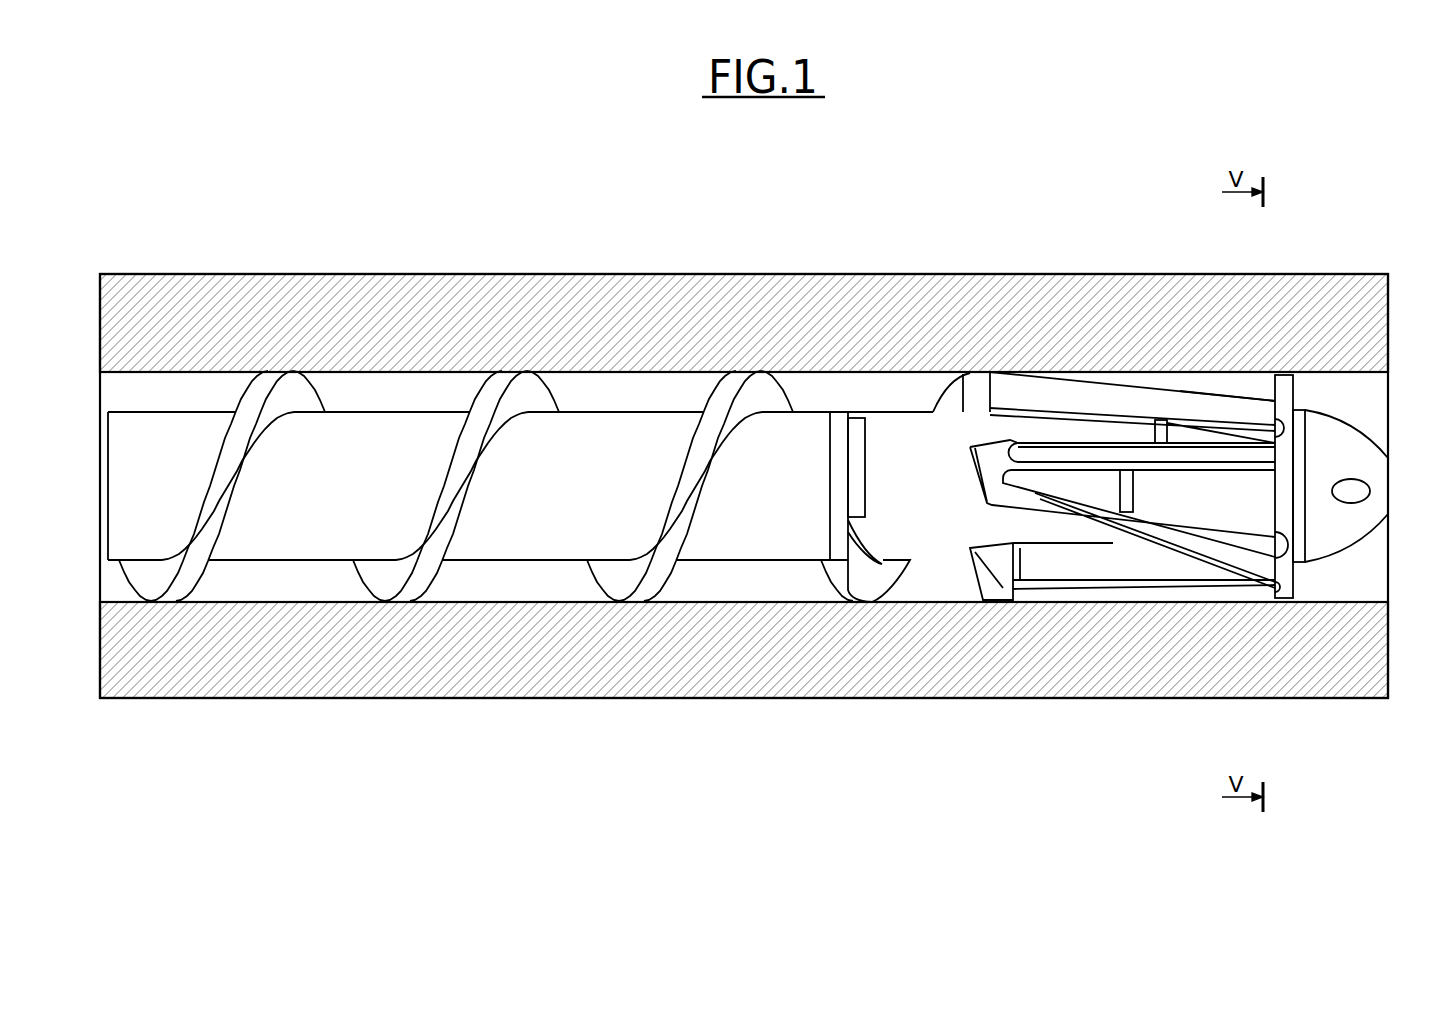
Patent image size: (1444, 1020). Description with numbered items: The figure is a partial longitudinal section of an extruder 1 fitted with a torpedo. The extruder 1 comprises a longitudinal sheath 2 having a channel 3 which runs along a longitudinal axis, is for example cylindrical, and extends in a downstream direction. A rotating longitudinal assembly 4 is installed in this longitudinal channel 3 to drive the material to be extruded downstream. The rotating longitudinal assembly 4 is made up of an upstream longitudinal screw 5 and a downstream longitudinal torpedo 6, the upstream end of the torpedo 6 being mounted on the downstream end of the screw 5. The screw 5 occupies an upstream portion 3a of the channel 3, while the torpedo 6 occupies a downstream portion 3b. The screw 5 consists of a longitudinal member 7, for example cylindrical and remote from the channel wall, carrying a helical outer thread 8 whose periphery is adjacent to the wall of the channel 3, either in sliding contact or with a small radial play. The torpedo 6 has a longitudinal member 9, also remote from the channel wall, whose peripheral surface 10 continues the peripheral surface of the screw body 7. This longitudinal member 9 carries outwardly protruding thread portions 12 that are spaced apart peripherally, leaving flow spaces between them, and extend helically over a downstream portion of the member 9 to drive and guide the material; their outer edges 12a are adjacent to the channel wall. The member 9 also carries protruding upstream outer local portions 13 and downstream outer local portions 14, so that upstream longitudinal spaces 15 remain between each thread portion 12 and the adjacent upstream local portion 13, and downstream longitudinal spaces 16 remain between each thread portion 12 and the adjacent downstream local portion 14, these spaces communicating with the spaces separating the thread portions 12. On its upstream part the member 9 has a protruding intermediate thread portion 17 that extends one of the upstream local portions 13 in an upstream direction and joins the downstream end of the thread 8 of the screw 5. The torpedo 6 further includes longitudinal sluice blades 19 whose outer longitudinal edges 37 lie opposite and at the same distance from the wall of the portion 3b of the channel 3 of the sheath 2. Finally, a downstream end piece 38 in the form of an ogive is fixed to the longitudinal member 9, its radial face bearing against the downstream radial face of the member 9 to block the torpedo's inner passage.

The extruder 1 is at (302, 257).
The longitudinal sheath 2 is at (388, 283).
The longitudinal channel 3 is at (831, 378).
The upstream portion of the longitudinal channel 3a is at (631, 373).
The downstream portion of the longitudinal channel 3b is at (1355, 371).
The rotating longitudinal assembly 4 is at (367, 392).
The longitudinal screw 5 is at (530, 533).
The longitudinal torpedo 6 is at (928, 573).
The longitudinal member of the screw 7 is at (300, 532).
The helical outer thread 8 is at (527, 387).
The longitudinal member of the torpedo 9 is at (848, 560).
The peripheral surface 10 is at (912, 445).
The thread portions 12 is at (1137, 398).
The outer edges of the thread portions 12a is at (1230, 398).
The upstream outer local portions 13 is at (975, 388).
The downstream outer local portions 14 is at (1287, 447).
The upstream longitudinal spaces 15 is at (985, 524).
The downstream longitudinal spaces 16 is at (1266, 503).
The intermediate thread portion 17 is at (900, 520).
The longitudinal sluice blades 19 is at (1063, 450).
The outer longitudinal edges of the sluice blades 37 is at (1180, 452).
The downstream end piece 38 is at (1378, 467).